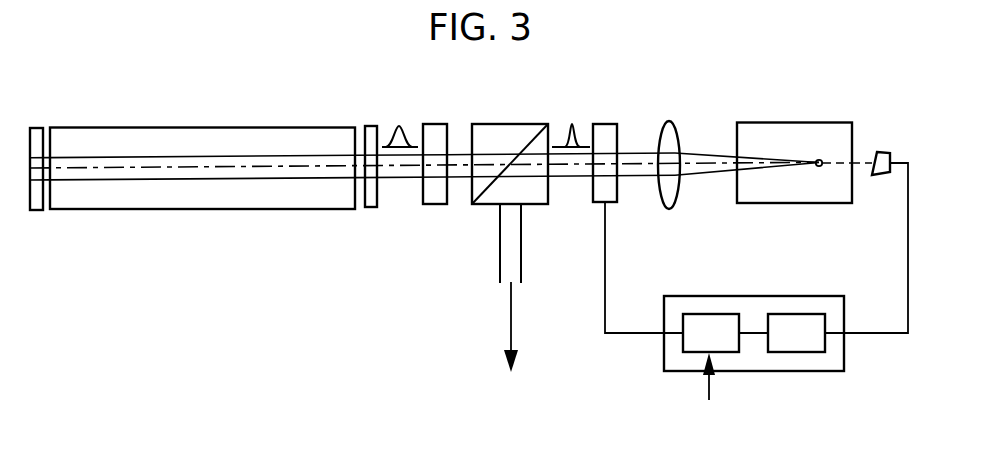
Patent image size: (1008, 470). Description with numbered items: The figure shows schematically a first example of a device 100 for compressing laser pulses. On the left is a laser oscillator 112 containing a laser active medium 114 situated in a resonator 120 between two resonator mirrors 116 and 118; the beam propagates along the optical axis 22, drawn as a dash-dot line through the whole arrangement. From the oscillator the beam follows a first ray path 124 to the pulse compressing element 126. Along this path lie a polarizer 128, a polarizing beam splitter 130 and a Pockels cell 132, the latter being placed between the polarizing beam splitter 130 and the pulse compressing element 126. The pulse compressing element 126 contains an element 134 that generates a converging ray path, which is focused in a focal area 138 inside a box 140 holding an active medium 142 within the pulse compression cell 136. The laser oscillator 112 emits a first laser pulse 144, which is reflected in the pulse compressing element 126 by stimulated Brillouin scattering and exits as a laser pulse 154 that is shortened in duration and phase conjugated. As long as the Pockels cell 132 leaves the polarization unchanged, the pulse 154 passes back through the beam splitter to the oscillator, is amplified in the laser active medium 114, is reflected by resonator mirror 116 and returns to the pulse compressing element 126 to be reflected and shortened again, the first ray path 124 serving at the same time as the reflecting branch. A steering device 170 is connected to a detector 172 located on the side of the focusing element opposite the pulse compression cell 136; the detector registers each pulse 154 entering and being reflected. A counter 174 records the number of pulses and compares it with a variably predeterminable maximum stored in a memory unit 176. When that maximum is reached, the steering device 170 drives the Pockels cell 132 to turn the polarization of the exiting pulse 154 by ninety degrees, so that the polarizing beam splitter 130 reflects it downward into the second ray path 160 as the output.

The optical axis 22 is at (277, 168).
The device 100 is at (202, 169).
The laser oscillator 112 is at (99, 130).
The laser active medium 114 is at (170, 135).
The resonator mirror 116 is at (36, 128).
The resonator mirror 118 is at (371, 127).
The resonator 120 is at (207, 216).
The first ray path 124 is at (463, 172).
The pulse compressing element 126 is at (763, 157).
The polarizer 128 is at (433, 128).
The polarizing beam splitter 130 is at (485, 128).
The Pockels cell 132 is at (604, 128).
The element to generate a converging ray path 134 is at (668, 122).
The pulse compression cell 136 is at (774, 123).
The focal area 138 is at (819, 159).
The box 140 is at (752, 204).
The active medium 142 is at (812, 195).
The first laser pulse 144 is at (398, 124).
The laser pulse 154 is at (571, 124).
The second ray path 160 is at (500, 268).
The steering device 170 is at (756, 282).
The detector 172 is at (878, 152).
The counter 174 is at (803, 322).
The memory unit 176 is at (712, 322).